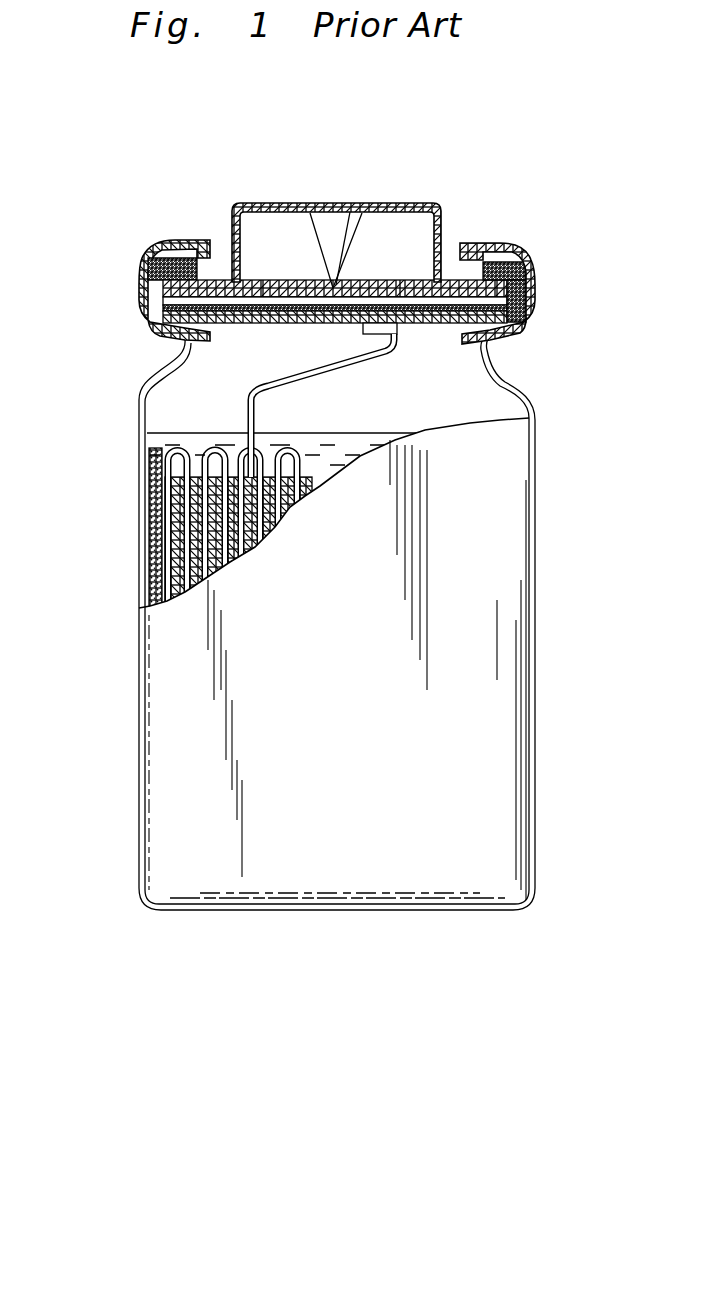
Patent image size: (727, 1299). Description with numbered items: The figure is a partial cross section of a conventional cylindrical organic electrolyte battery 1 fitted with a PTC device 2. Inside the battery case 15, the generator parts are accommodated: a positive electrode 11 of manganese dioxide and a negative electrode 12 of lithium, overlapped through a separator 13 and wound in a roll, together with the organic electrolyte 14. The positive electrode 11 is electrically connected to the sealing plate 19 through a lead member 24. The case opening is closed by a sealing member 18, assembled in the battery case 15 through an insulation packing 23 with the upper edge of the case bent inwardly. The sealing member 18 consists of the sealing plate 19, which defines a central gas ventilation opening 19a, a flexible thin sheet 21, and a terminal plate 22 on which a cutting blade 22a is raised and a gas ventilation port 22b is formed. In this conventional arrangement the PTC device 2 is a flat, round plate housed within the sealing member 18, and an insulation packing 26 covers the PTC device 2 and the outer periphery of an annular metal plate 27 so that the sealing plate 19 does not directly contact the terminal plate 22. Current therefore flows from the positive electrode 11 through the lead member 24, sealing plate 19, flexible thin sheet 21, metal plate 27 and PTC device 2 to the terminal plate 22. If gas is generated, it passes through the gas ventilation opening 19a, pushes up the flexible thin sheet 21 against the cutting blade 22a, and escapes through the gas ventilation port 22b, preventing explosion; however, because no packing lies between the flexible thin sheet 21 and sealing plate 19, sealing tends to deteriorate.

The battery 1 is at (540, 617).
The PTC device 2 is at (445, 283).
The positive electrode 11 is at (242, 497).
The negative electrode 12 is at (232, 527).
The separator 13 is at (243, 545).
The electrolyte 14 is at (185, 443).
The battery case 15 is at (137, 583).
The sealing member 18 is at (399, 294).
The sealing plate 19 is at (277, 322).
The gas ventilation opening 19a is at (328, 325).
The flexible thin sheet 21 is at (417, 283).
The terminal plate 22 is at (280, 205).
The cutting blade 22a is at (350, 212).
The gas ventilation port 22b is at (320, 205).
The insulation packing 23 is at (530, 293).
The lead member 24 is at (375, 362).
The insulation packing 26 is at (528, 285).
The metal plate 27 is at (485, 275).